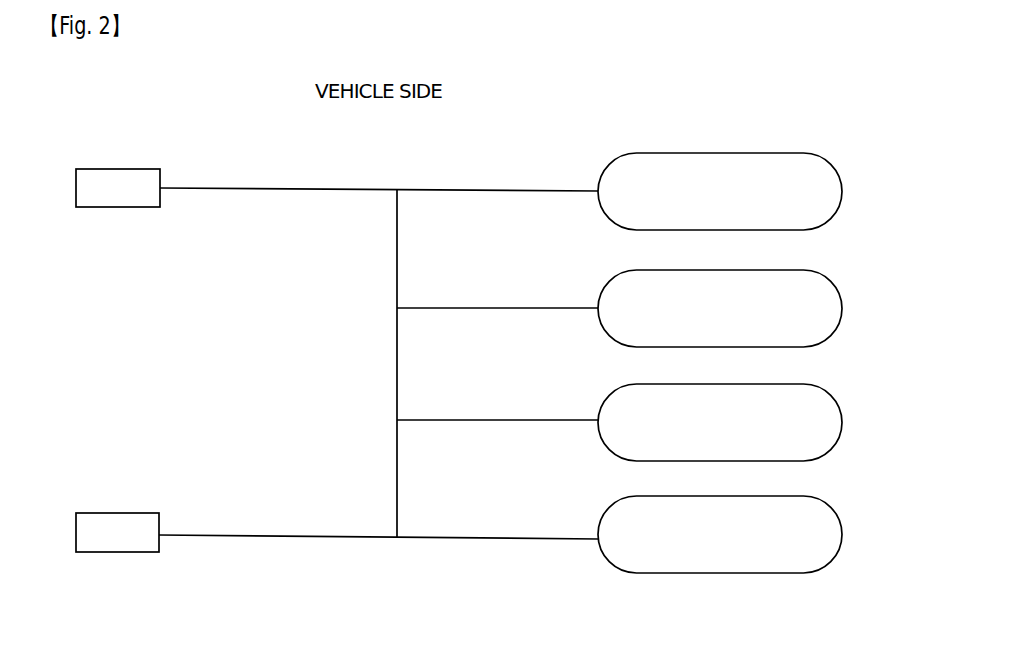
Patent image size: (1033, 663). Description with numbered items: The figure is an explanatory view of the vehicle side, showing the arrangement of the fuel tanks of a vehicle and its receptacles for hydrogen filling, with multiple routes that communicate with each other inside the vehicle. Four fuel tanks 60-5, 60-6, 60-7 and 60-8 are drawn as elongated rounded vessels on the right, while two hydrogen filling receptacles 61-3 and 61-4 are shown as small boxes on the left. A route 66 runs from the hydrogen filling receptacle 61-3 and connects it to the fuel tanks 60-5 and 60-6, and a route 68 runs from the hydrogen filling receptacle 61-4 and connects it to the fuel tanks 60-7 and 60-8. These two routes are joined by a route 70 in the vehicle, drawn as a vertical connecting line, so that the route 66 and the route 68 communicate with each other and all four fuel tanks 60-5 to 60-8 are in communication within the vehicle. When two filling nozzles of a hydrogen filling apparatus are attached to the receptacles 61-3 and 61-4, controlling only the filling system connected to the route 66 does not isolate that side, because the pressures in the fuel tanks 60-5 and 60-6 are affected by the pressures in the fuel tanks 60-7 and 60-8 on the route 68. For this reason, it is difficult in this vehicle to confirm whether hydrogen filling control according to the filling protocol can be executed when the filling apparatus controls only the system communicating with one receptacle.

The hydrogen filling receptacle 61-3 is at (128, 168).
The hydrogen filling receptacle 61-4 is at (122, 513).
The route 66 is at (502, 189).
The route 68 is at (465, 539).
The route 70 is at (396, 343).
The fuel tank 60-5 is at (837, 172).
The fuel tank 60-6 is at (837, 291).
The fuel tank 60-7 is at (837, 404).
The fuel tank 60-8 is at (837, 517).